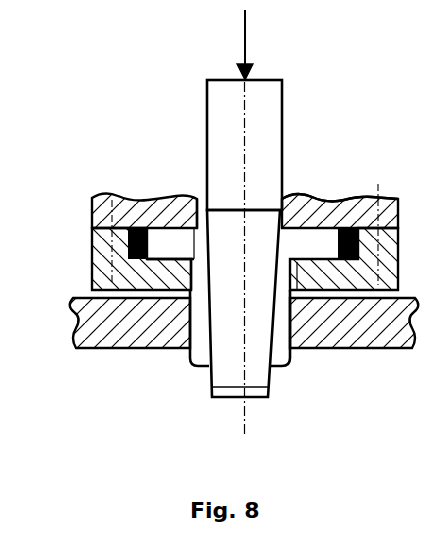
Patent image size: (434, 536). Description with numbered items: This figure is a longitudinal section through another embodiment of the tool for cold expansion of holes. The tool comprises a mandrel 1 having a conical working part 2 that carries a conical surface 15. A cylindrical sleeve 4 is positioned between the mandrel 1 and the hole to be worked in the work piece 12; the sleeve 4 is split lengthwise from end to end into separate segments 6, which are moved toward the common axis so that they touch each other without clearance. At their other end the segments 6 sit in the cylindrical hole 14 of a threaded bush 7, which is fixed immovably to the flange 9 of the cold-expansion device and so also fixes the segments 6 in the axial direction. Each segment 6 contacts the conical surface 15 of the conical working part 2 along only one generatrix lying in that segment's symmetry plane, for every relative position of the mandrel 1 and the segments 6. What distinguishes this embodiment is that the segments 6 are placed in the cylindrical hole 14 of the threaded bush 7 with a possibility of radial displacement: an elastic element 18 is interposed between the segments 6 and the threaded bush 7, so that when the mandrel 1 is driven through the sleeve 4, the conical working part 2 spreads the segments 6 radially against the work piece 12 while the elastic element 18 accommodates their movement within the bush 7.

The mandrel 1 is at (260, 160).
The conical working part 2 is at (228, 350).
The cylindrical sleeve 4 is at (195, 243).
The segments 6 is at (283, 327).
The threaded bush 7 is at (97, 277).
The flange 9 is at (100, 212).
The work piece 12 is at (377, 337).
The cylindrical hole 14 is at (182, 263).
The conical surface 15 is at (298, 197).
The elastic element 18 is at (112, 197).